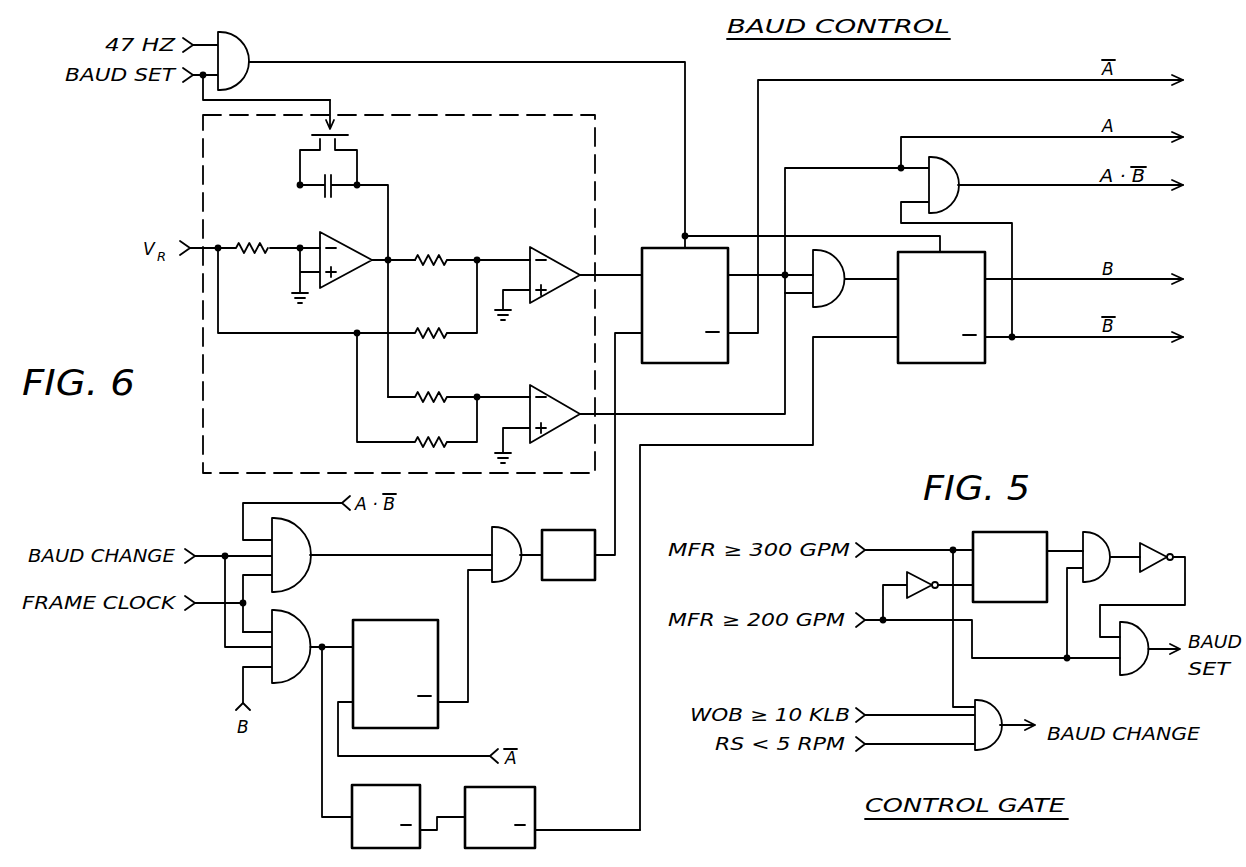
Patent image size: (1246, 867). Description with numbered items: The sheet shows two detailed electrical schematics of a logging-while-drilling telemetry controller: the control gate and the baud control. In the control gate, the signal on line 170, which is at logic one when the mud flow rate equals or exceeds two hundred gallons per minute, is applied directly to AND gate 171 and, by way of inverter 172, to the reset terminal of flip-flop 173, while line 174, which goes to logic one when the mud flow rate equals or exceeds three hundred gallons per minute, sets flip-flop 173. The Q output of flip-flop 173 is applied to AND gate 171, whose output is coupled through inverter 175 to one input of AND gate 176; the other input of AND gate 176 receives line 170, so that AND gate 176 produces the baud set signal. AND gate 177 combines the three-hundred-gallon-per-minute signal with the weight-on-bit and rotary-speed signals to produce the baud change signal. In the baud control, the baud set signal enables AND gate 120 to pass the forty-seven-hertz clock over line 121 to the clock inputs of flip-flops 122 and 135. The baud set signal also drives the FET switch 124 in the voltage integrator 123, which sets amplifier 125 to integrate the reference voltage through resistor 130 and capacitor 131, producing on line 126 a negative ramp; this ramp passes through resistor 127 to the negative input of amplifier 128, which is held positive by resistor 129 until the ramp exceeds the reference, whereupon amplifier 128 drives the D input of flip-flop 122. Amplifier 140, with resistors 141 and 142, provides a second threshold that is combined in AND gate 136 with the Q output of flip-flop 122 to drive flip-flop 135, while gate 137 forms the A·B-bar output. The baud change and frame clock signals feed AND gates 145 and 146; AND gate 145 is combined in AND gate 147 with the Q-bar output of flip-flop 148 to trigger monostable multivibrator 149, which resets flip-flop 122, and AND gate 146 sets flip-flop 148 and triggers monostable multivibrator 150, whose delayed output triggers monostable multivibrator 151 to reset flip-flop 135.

In FIG. 6, the AND gate 120 is at (248, 54).
In FIG. 6, the line 121 is at (457, 61).
In FIG. 6, the flip-flop 122 is at (668, 241).
In FIG. 6, the voltage integrator 123 is at (493, 113).
In FIG. 6, the FET switch 124 is at (338, 137).
In FIG. 6, the amplifier 125 is at (345, 278).
In FIG. 6, the line 126 is at (377, 265).
In FIG. 6, the resistor 127 is at (435, 242).
In FIG. 6, the amplifier 128 is at (545, 247).
In FIG. 6, the resistor 129 is at (432, 325).
In FIG. 6, the resistor 130 is at (248, 235).
In FIG. 6, the capacitor 131 is at (332, 200).
In FIG. 6, the flip-flop 135 is at (928, 367).
In FIG. 6, the AND gate 136 is at (835, 300).
In FIG. 6, the gate 137 is at (958, 175).
In FIG. 6, the amplifier 140 is at (547, 385).
In FIG. 6, the resistor 141 is at (432, 390).
In FIG. 6, the resistor 142 is at (422, 435).
In FIG. 6, the AND gate 145 is at (307, 538).
In FIG. 6, the AND gate 146 is at (302, 618).
In FIG. 6, the AND gate 147 is at (507, 530).
In FIG. 6, the flip-flop 148 is at (390, 618).
In FIG. 6, the monostable multivibrator 149 is at (560, 583).
In FIG. 6, the monostable multivibrator 150 is at (350, 828).
In FIG. 6, the monostable multivibrator 151 is at (537, 802).
In FIG. 5, the line 170 is at (880, 627).
In FIG. 5, the AND gate 171 is at (1100, 532).
In FIG. 5, the inverter 172 is at (905, 578).
In FIG. 5, the flip-flop 173 is at (990, 603).
In FIG. 5, the line 174 is at (920, 548).
In FIG. 5, the inverter 175 is at (1157, 545).
In FIG. 5, the AND gate 176 is at (1135, 668).
In FIG. 5, the AND gate 177 is at (987, 700).